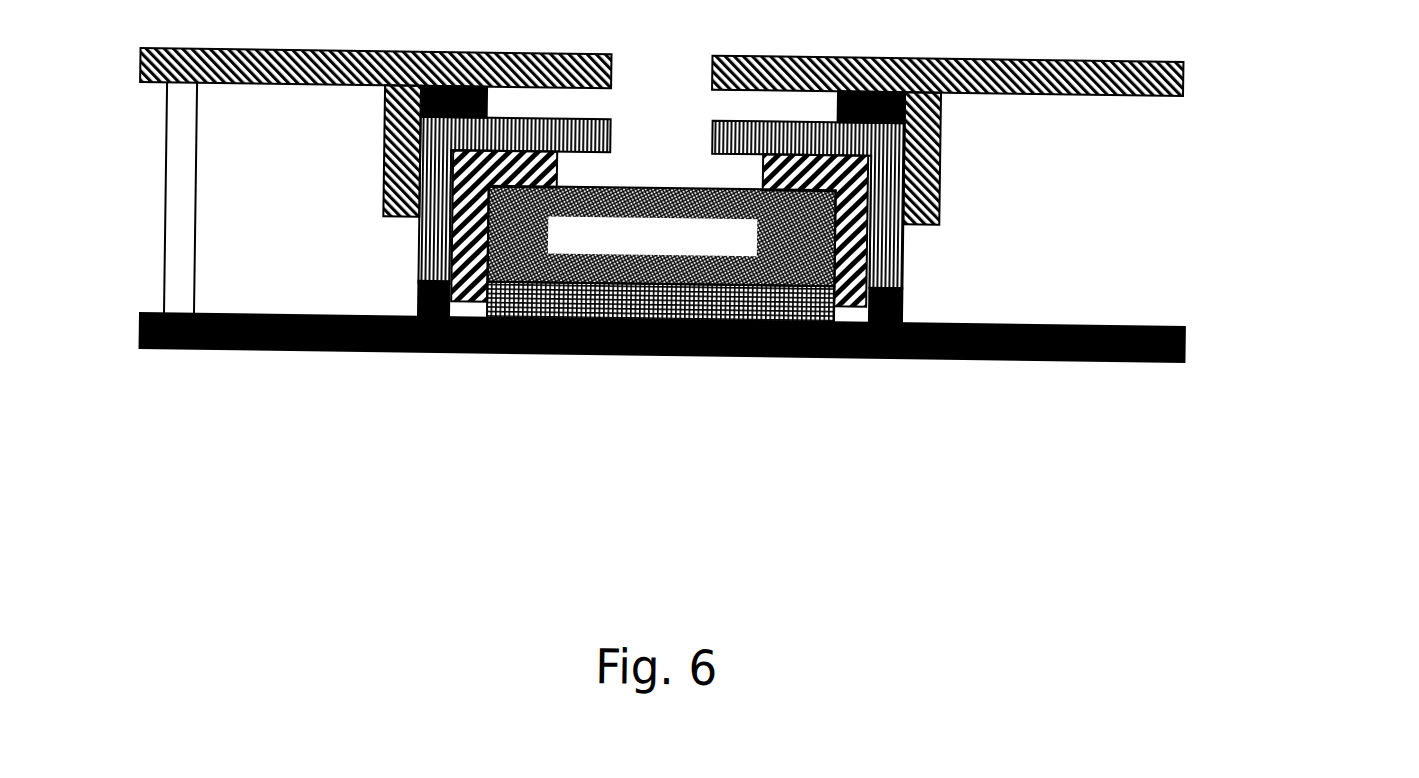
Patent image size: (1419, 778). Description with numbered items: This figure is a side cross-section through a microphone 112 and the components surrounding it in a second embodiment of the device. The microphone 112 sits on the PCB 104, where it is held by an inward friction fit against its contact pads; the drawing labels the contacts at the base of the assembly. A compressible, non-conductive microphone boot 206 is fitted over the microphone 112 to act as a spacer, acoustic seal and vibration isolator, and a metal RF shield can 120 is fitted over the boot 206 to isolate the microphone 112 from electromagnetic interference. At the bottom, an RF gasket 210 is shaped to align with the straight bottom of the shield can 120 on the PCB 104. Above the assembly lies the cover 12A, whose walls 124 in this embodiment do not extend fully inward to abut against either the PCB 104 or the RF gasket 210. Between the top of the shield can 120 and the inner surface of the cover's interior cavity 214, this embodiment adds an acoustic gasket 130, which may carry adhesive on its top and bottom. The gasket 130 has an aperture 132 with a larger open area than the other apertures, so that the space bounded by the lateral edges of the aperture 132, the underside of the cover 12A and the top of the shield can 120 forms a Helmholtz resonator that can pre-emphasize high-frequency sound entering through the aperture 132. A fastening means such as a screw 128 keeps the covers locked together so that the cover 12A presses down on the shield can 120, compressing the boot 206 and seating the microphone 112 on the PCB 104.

The cover 12A is at (770, 73).
The walls 124 is at (952, 99).
The gasket 130 is at (402, 99).
The RF shield can 120 is at (919, 164).
The microphone boot 206 is at (888, 231).
The microphone 112 is at (661, 254).
The RF gasket 210 is at (919, 296).
The PCB 104 is at (731, 365).
The screw 128 is at (135, 197).
The aperture 132 is at (524, 104).
The interior cavity 214 is at (783, 108).
The element contacts is at (462, 294).